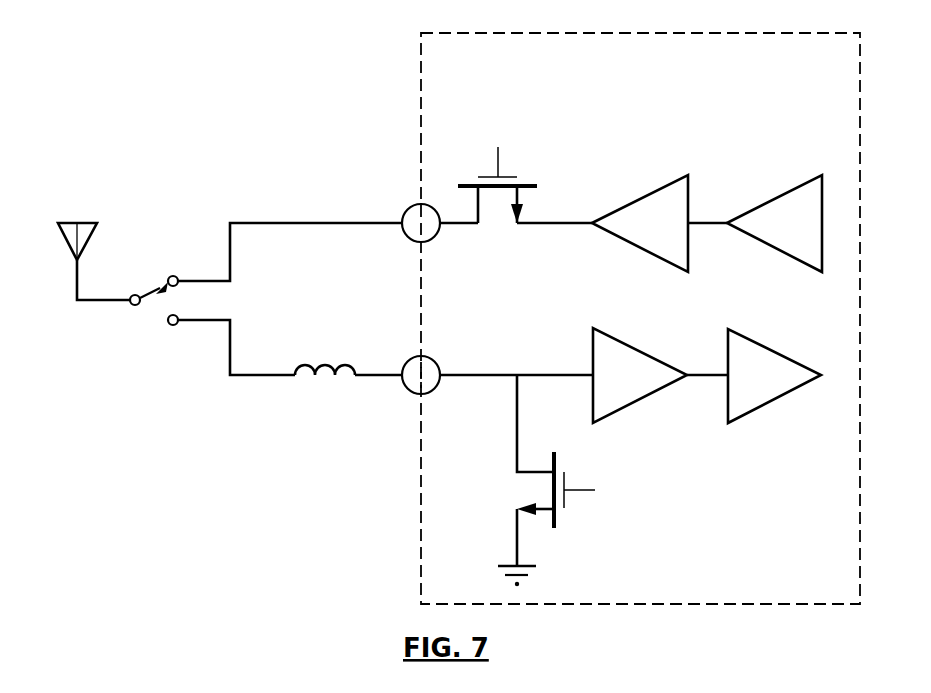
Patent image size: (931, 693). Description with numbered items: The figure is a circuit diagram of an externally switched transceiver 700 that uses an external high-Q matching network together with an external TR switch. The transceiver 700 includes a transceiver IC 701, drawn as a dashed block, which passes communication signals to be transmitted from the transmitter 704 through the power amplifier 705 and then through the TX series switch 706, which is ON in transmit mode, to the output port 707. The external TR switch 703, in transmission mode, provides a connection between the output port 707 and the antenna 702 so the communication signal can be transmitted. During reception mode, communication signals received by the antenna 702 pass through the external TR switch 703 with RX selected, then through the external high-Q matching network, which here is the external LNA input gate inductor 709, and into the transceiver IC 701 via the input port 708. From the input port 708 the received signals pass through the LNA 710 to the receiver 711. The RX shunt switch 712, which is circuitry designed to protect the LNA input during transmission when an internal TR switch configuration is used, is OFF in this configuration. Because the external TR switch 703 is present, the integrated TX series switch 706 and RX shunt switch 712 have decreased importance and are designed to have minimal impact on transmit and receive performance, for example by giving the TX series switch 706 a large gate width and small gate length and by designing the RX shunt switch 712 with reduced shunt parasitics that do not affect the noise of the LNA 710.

The transceiver 700 is at (260, 100).
The transceiver IC 701 is at (775, 605).
The antenna 702 is at (57, 237).
The external TR switch 703 is at (137, 283).
The transmitter 704 is at (774, 223).
The power amplifier 705 is at (640, 223).
The TX series switch 706 is at (535, 183).
The output port 707 is at (407, 205).
The input port 708 is at (412, 357).
The external LNA input (gate) inductor 709 is at (320, 355).
The LNA 710 is at (640, 375).
The receiver 711 is at (774, 376).
The RX shunt switch 712 is at (509, 498).